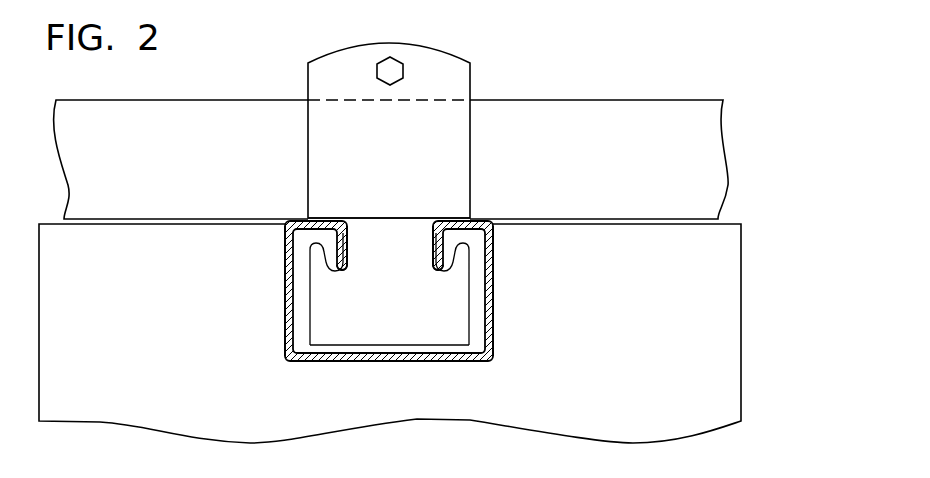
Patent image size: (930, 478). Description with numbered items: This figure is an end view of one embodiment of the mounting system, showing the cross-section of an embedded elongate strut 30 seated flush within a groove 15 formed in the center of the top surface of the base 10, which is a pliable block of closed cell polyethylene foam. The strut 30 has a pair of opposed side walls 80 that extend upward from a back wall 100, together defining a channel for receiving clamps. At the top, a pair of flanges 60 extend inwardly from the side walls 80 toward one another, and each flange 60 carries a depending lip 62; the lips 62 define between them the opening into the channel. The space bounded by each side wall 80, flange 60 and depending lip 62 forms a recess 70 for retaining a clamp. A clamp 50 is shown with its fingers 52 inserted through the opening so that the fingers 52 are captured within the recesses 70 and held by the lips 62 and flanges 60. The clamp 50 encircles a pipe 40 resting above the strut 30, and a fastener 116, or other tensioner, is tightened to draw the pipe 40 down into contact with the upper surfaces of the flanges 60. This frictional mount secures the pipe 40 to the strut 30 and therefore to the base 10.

The base 10 is at (742, 290).
The groove 15 is at (480, 356).
The elongate strut 30 is at (494, 246).
The pipe 40 is at (664, 108).
The clamp 50 is at (450, 61).
The fingers 52 is at (312, 258).
The flanges 60 is at (442, 221).
The depending lip 62 is at (440, 258).
The recess 70 is at (445, 243).
The side walls 80 is at (315, 295).
The back wall 100 is at (390, 350).
The fastener 116 is at (388, 57).